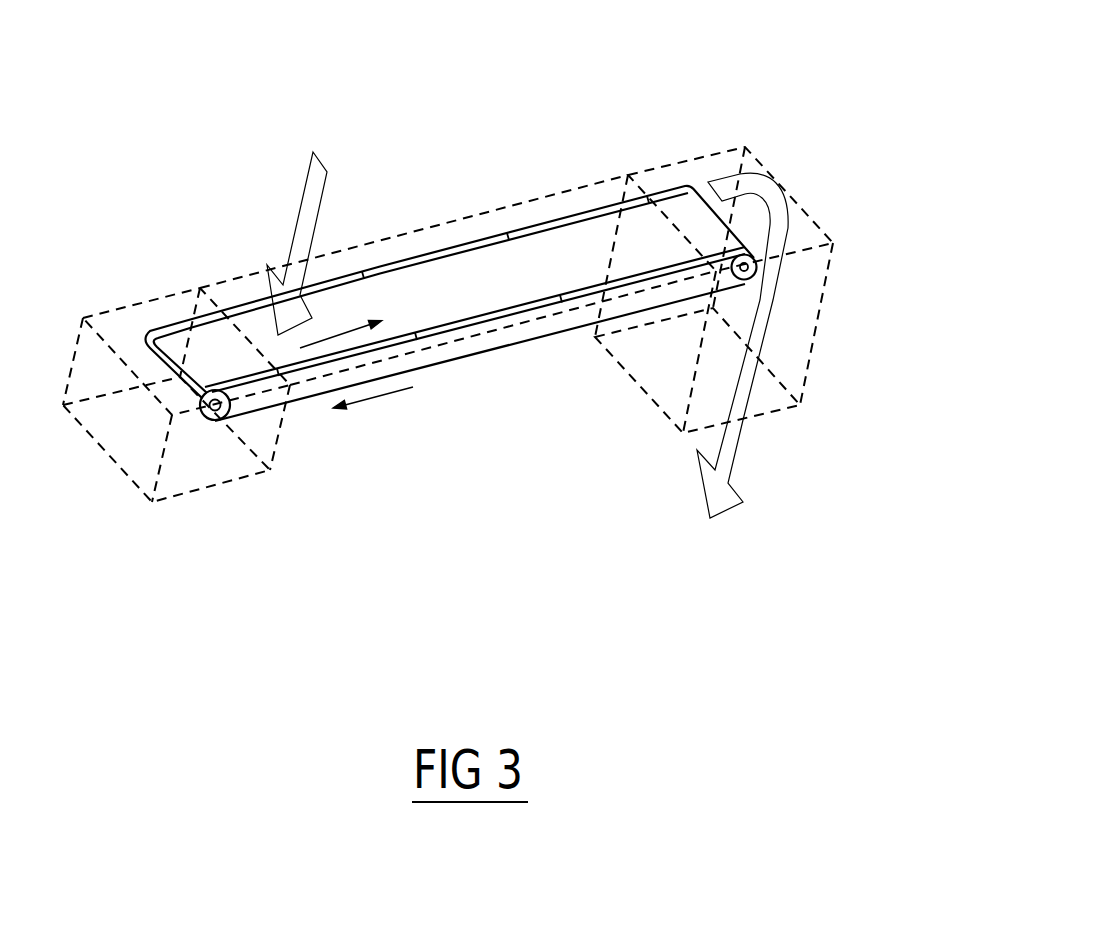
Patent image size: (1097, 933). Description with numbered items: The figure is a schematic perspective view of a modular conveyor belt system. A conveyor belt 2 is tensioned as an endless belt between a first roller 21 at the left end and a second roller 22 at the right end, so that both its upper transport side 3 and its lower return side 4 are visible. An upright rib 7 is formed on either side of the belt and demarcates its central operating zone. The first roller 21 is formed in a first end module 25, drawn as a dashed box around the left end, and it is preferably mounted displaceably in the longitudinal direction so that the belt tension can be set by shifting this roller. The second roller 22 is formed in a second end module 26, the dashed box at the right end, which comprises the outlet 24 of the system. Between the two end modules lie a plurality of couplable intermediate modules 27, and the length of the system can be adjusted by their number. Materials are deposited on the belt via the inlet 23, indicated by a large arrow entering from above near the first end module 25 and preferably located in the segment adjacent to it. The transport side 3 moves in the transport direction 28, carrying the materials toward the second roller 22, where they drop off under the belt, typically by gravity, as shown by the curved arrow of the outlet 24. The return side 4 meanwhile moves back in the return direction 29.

The conveyor belt 2 is at (451, 310).
The transport side 3 is at (490, 330).
The return side 4 is at (562, 335).
The upright rib 7 is at (577, 223).
The first roller 21 is at (222, 412).
The second roller 22 is at (737, 278).
The inlet 23 is at (308, 225).
The outlet 24 is at (737, 364).
The first end module 25 is at (162, 312).
The second end module 26 is at (712, 170).
The intermediate module 27 is at (325, 270).
The transport direction 28 is at (341, 324).
The return direction 29 is at (373, 411).